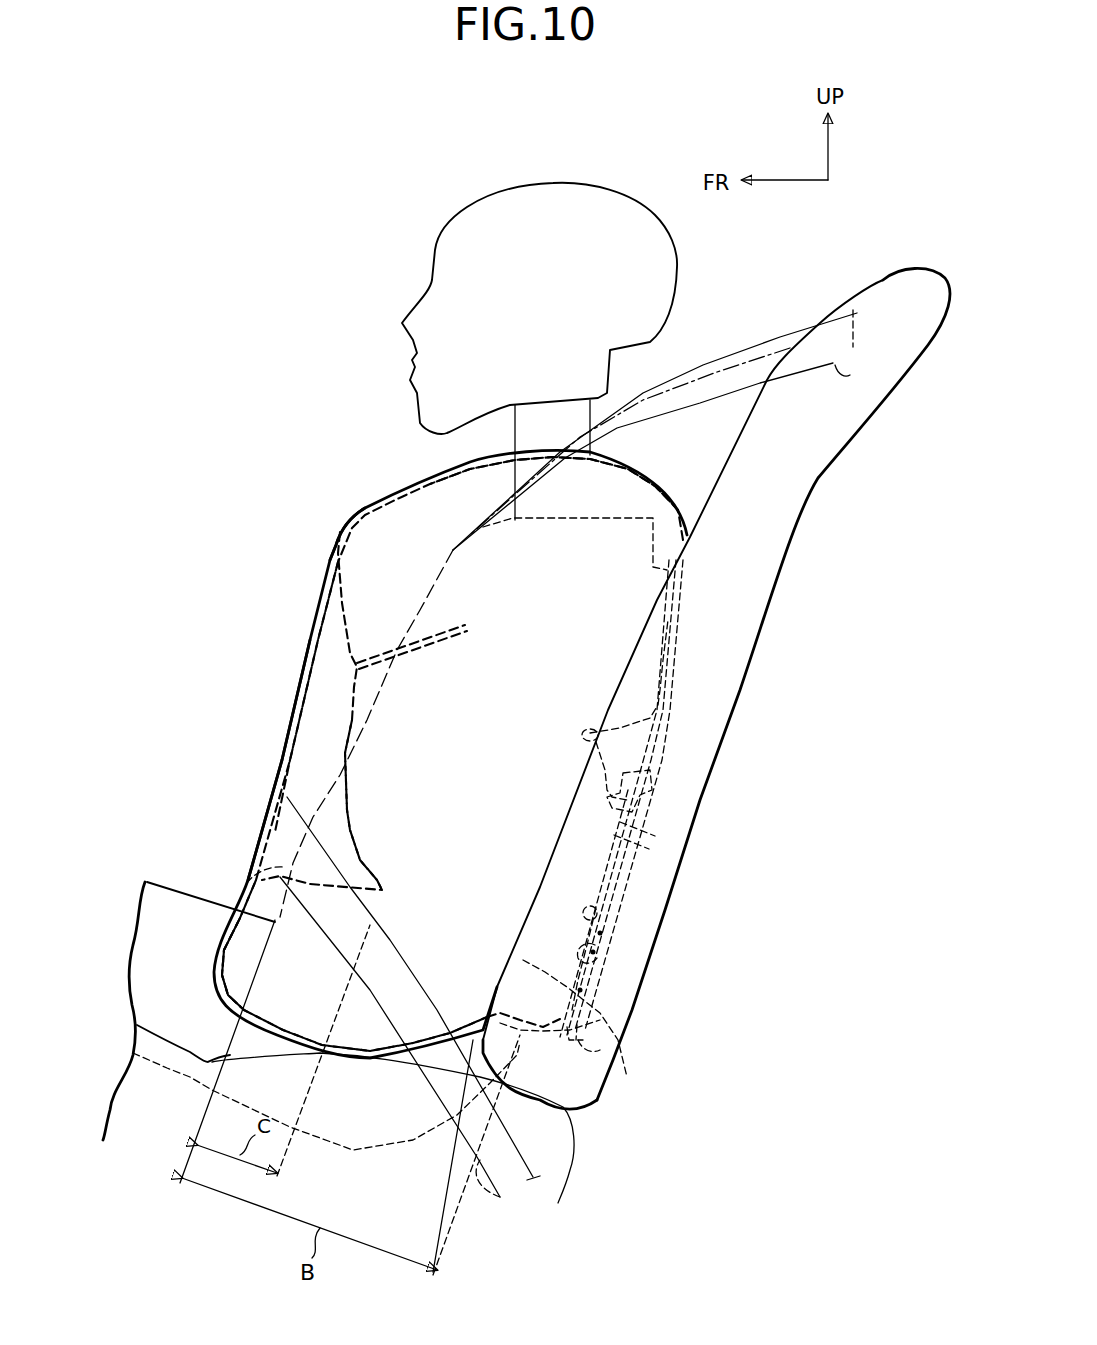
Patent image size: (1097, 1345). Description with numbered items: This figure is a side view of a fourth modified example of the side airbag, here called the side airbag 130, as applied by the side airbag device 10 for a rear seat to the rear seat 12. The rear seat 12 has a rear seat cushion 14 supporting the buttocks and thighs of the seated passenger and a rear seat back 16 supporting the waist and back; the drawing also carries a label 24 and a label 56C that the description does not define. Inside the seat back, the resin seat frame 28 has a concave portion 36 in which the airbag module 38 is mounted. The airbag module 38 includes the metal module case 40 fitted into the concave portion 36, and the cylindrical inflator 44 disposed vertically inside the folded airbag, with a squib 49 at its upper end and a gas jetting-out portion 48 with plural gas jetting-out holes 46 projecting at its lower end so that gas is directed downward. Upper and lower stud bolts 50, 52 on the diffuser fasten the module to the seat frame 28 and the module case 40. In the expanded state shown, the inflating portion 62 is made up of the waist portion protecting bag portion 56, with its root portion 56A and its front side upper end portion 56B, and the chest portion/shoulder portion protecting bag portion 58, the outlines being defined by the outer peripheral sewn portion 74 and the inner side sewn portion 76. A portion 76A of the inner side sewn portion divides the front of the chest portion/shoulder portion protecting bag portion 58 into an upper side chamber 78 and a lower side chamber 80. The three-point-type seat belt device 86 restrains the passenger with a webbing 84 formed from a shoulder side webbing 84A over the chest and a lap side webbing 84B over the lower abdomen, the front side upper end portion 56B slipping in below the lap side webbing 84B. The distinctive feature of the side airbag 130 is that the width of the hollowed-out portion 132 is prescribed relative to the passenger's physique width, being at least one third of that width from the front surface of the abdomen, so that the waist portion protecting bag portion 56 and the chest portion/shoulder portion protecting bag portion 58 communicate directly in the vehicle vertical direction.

The side airbag device for a rear seat 10 is at (222, 617).
The rear seat 12 is at (820, 475).
The rear seat cushion 14 is at (165, 1040).
The rear seat back 16 is at (702, 825).
The seat back pad 24 is at (780, 538).
The seat frame 28 is at (627, 1078).
The concave portion 36 is at (583, 963).
The airbag module 38 is at (663, 745).
The module case 40 is at (583, 1023).
The inflator 44 is at (640, 860).
The gas jetting-out holes 46 is at (600, 923).
The gas jetting-out portion 48 is at (593, 940).
The squib 49 is at (655, 790).
The stud bolt 50 is at (665, 838).
The stud bolt 52 is at (643, 905).
The waist portion protecting bag portion 56 is at (287, 997).
The root portion 56A is at (600, 1003).
The front side upper end portion 56B is at (268, 888).
The front end of lower inflation portion 56C is at (260, 935).
The chest portion/shoulder portion protecting bag portion 58 is at (373, 580).
The inflating portion 62 is at (404, 789).
The outer peripheral sewn portion 74 is at (290, 808).
The inner side sewn portion 76 is at (350, 693).
The portion of the inner side sewn portion 76A is at (430, 645).
The upper side chamber 78 is at (385, 523).
The lower side chamber 80 is at (380, 713).
The webbing 84 is at (780, 345).
The shoulder side webbing 84A is at (718, 363).
The lap side webbing 84B is at (487, 1195).
The three-point-type seat belt device 86 is at (814, 234).
The side airbag 130 is at (340, 527).
The hollowed-out portion 132 is at (348, 824).